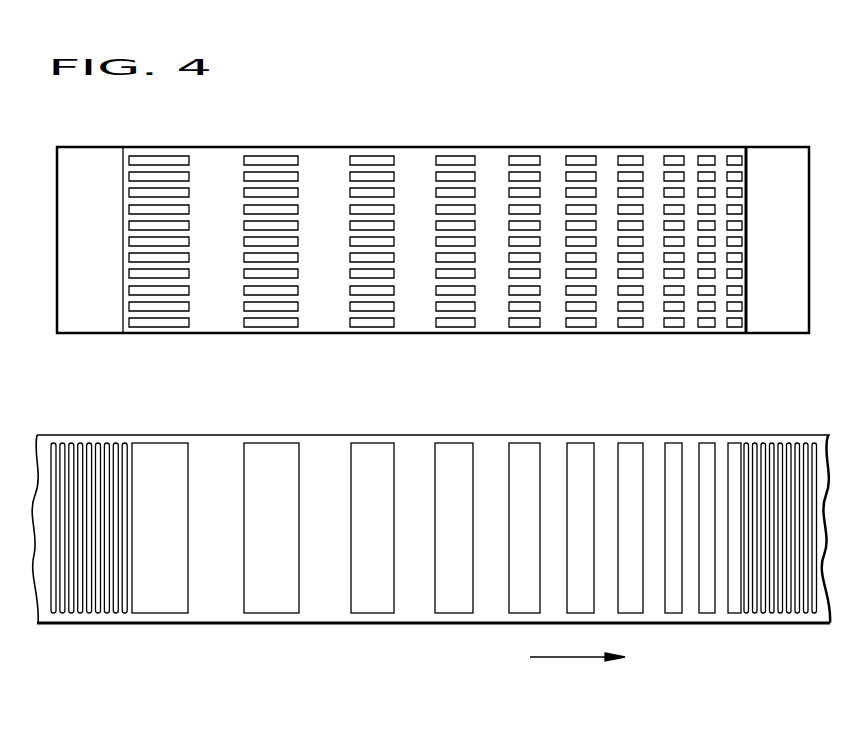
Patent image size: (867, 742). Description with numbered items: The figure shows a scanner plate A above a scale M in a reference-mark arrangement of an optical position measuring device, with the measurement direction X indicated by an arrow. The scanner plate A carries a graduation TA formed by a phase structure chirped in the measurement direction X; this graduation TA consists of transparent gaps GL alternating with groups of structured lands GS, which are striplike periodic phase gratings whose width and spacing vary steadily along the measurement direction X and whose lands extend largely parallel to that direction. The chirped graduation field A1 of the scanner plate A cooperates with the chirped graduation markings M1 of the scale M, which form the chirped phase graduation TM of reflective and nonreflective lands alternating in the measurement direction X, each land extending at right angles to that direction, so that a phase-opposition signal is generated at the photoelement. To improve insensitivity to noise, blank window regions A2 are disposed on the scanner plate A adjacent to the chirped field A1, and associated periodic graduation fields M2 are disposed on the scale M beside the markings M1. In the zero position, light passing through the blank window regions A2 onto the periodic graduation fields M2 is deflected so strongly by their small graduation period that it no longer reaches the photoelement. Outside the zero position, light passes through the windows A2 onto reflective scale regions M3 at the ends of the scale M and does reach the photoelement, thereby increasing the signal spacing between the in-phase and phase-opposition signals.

The scanner plate A is at (320, 160).
The chirped graduation field A1 is at (554, 160).
The blank window regions A2 is at (81, 158).
The graduation TA is at (488, 167).
The structured lands GS is at (373, 327).
The transparent gaps GL is at (492, 313).
The scale M is at (207, 450).
The graduation markings M1 is at (410, 452).
The periodic graduation fields M2 is at (85, 446).
The reflective scale regions M3 is at (44, 446).
The chirped phase graduation TM is at (210, 600).
The measurement direction X is at (577, 671).